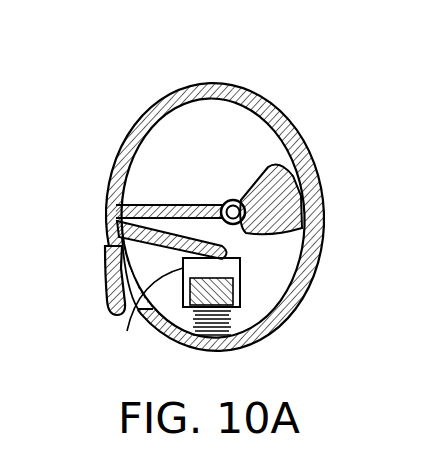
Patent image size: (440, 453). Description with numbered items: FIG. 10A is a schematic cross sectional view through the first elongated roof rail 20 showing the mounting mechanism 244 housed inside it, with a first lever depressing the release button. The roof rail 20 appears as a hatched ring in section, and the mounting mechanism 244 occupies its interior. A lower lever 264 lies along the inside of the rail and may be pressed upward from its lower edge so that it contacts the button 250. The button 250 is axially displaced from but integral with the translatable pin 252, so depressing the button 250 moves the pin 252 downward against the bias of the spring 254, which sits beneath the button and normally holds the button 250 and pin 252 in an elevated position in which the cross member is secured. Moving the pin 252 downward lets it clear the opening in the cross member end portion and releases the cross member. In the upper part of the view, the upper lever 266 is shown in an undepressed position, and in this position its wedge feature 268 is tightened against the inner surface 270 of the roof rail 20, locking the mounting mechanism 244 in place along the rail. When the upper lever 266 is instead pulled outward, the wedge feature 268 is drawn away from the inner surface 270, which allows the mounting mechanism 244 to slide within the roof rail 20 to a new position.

The first elongated roof rail 20 is at (209, 83).
The mounting mechanism 244 is at (304, 71).
The button 250 is at (239, 258).
The translatable pin 252 is at (161, 276).
The spring 254 is at (252, 332).
The lower lever 264 is at (101, 261).
The upper lever 266 is at (117, 150).
The wedge feature 268 is at (236, 198).
The inner surface 270 is at (260, 152).